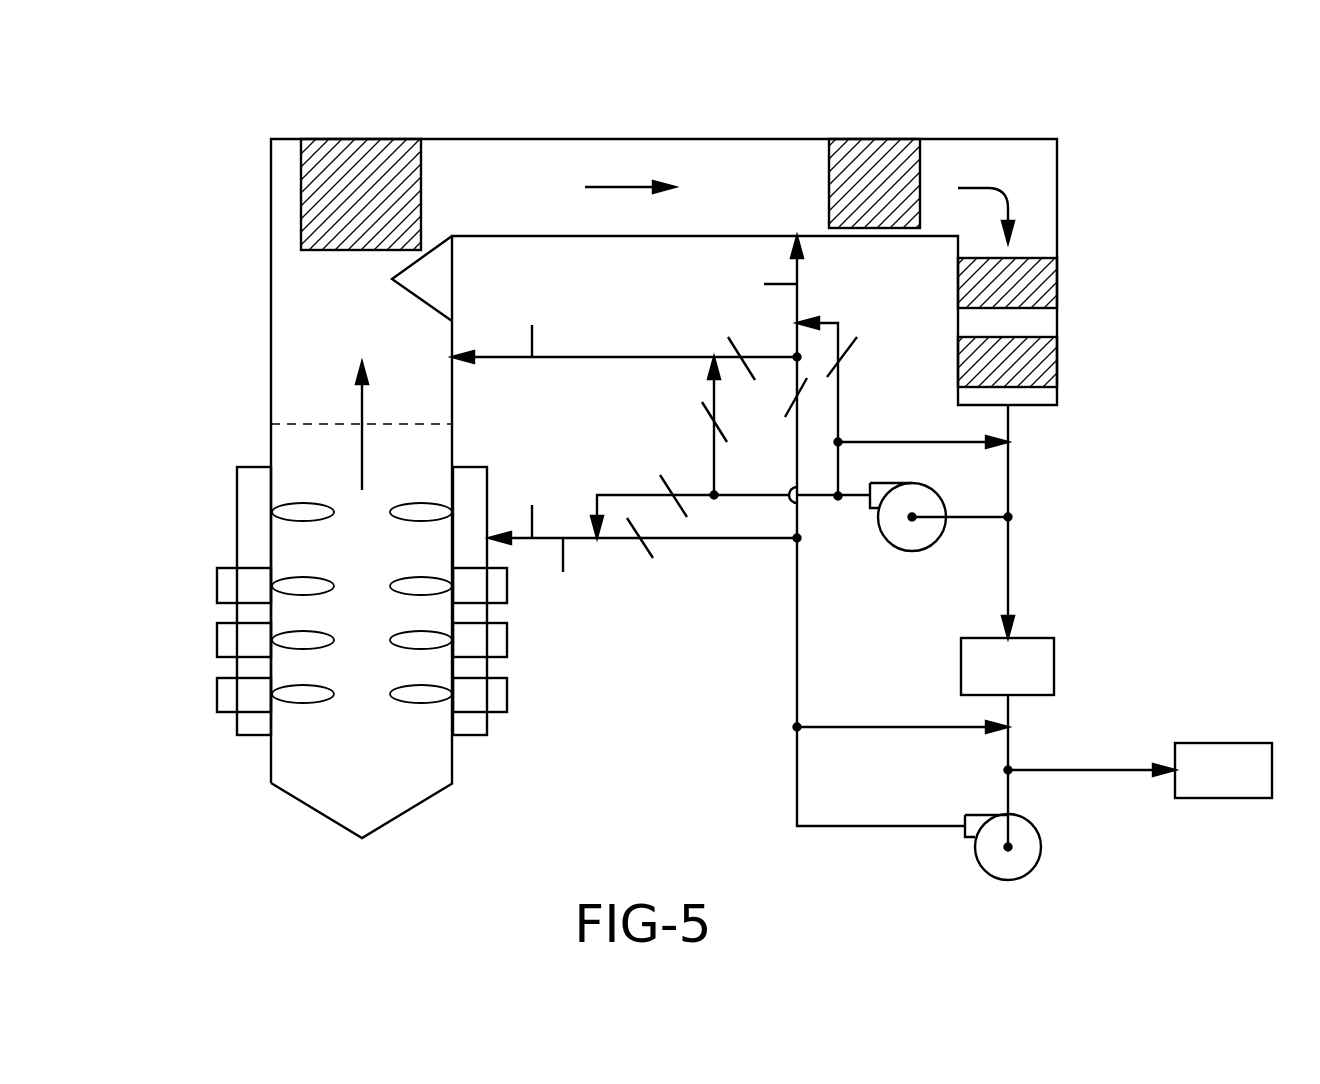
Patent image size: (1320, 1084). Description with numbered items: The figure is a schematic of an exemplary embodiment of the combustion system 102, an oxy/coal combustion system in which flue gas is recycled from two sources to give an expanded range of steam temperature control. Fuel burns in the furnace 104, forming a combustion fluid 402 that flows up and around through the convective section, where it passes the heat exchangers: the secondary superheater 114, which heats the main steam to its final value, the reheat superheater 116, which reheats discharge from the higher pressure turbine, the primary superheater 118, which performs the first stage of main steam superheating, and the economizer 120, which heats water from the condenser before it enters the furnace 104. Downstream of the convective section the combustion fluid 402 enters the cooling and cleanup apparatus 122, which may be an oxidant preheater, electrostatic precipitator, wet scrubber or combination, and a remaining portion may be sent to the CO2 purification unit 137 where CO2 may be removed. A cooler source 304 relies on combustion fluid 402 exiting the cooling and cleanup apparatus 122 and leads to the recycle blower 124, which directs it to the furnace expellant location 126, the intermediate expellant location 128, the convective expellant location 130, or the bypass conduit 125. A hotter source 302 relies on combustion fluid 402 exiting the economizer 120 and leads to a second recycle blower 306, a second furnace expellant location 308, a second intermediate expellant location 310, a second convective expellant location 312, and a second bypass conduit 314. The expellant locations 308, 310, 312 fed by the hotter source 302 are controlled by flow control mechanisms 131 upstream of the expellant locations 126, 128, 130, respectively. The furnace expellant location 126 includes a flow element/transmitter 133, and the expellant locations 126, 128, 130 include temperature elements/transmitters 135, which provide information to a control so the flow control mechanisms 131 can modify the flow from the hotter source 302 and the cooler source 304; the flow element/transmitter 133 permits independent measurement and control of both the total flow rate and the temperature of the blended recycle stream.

The combustion system 102 is at (190, 308).
The furnace 104 is at (332, 740).
The secondary superheater 114 is at (347, 170).
The reheat superheater 116 is at (870, 168).
The primary superheater 118 is at (1040, 275).
The economizer 120 is at (1040, 355).
The cooling and cleanup apparatus 122 is at (1007, 666).
The recycle blower 124 is at (985, 872).
The bypass conduit 125 is at (845, 727).
The furnace expellant location 126 is at (490, 540).
The intermediate expellant location 128 is at (453, 350).
The convective expellant location 130 is at (802, 237).
The flow control mechanism 131 is at (855, 350).
The flow element/transmitter 133 is at (565, 556).
The temperature element/transmitter 135 is at (533, 345).
The CO2 purification unit 137 is at (1140, 770).
The hotter source 302 is at (975, 517).
The cooler source 304 is at (1012, 790).
The second recycle blower 306 is at (890, 540).
The second furnace expellant location 308 is at (608, 492).
The second intermediate expellant location 310 is at (710, 393).
The second convective expellant location 312 is at (832, 322).
The second bypass conduit 314 is at (950, 440).
The combustion fluid 402 is at (605, 186).